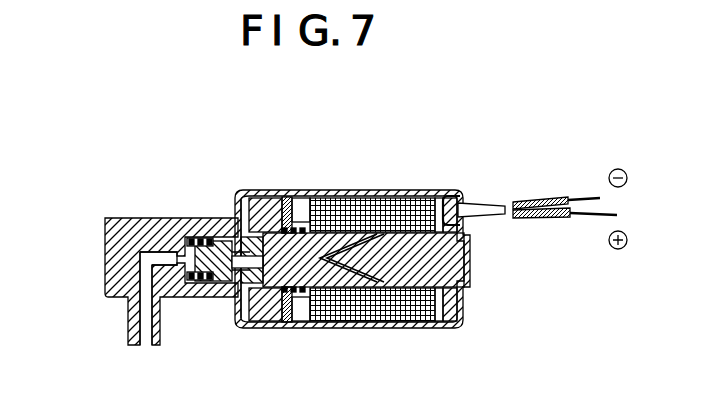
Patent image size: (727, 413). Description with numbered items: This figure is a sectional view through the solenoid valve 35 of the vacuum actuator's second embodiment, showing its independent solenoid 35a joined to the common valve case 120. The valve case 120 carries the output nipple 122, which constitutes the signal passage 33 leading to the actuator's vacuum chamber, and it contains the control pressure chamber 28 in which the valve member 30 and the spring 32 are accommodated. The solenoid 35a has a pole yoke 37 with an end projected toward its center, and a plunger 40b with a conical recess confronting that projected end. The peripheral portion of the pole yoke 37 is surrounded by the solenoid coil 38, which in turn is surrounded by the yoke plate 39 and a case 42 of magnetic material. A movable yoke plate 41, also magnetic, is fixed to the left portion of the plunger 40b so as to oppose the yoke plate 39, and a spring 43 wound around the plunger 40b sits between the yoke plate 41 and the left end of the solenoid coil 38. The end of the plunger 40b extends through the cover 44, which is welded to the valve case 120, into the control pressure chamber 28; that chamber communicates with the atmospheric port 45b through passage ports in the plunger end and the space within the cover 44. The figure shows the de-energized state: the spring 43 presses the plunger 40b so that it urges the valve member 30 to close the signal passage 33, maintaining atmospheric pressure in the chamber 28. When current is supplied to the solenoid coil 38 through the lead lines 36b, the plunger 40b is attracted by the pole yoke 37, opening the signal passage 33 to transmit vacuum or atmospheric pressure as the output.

The valve case 120 is at (104, 247).
The output nipple 122 is at (146, 337).
The signal passage 33 is at (143, 255).
The valve member 30 is at (218, 283).
The control pressure chamber 28 is at (198, 239).
The spring 32 is at (196, 281).
The solenoid coil 38 is at (424, 322).
The atmospheric port 45b is at (231, 214).
The cover 44 is at (243, 192).
The yoke plate 41 is at (266, 324).
The yoke plate 39 is at (286, 196).
The spring 43 is at (306, 322).
The plunger 40b is at (333, 191).
The solenoid 35a is at (364, 321).
The case 42 is at (399, 196).
The solenoid valve 35 is at (315, 248).
The pole yoke 37 is at (413, 237).
The lead lines 36b is at (534, 198).